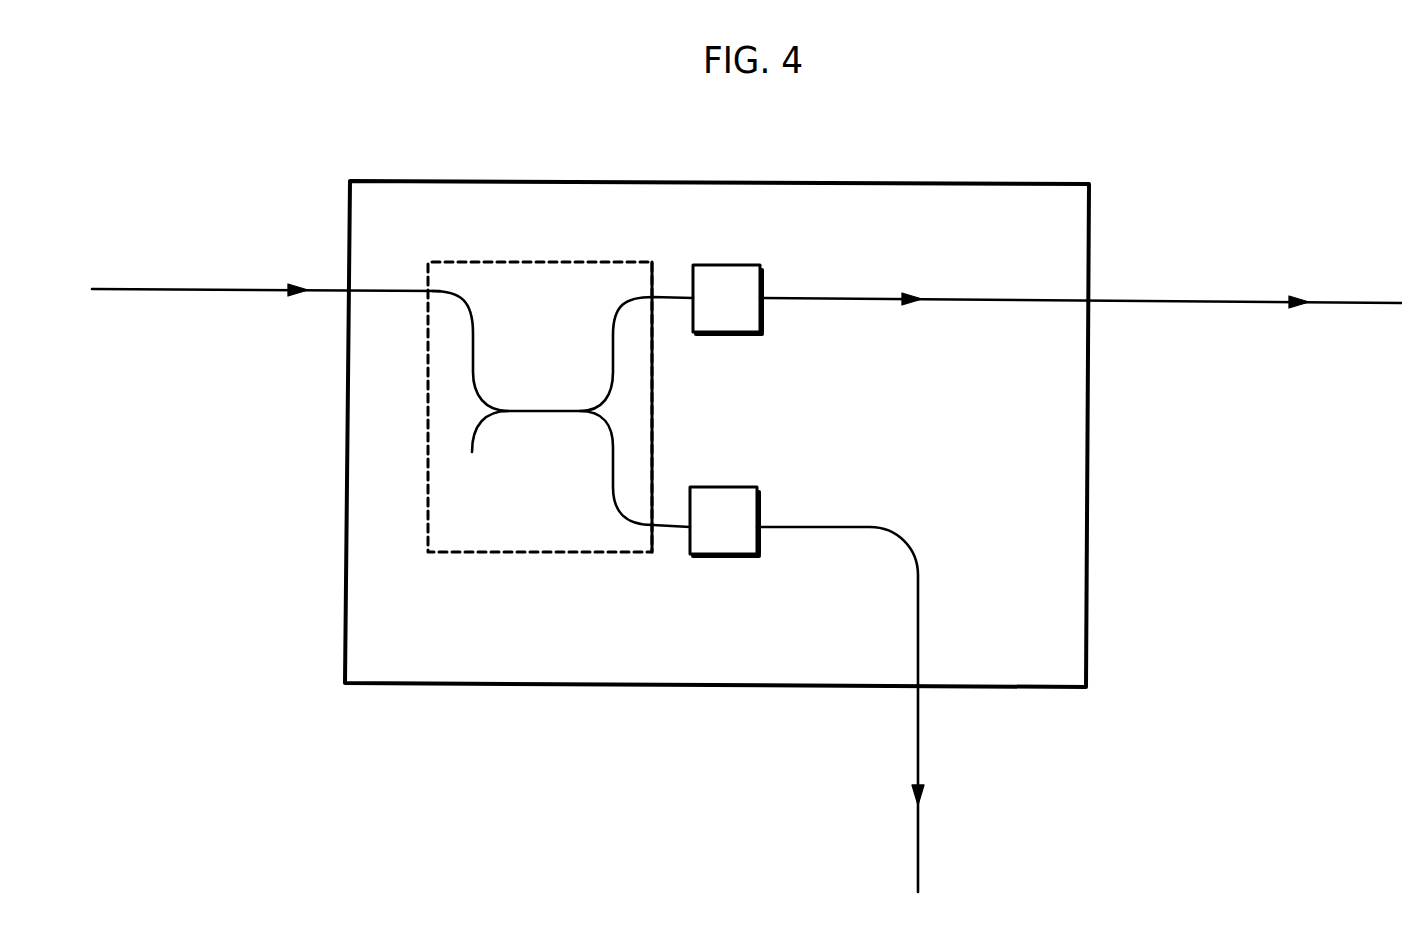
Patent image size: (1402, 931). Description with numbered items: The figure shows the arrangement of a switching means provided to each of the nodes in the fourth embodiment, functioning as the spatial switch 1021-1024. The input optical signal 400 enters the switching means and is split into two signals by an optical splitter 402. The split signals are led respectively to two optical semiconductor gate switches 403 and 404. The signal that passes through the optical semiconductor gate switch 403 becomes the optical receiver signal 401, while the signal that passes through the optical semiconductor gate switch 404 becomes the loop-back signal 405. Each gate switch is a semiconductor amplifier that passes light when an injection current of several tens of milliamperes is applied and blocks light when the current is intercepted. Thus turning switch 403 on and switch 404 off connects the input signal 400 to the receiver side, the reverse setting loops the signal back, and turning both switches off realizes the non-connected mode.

The input optical signal 400 is at (210, 289).
The optical receiver signal 401 is at (1205, 301).
The optical splitter 402 is at (562, 243).
The optical semiconductor gate switch 403 is at (762, 281).
The optical semiconductor gate switch 404 is at (759, 507).
The loop-back signal 405 is at (920, 850).
The spatial switch 1021-1024 is at (961, 163).